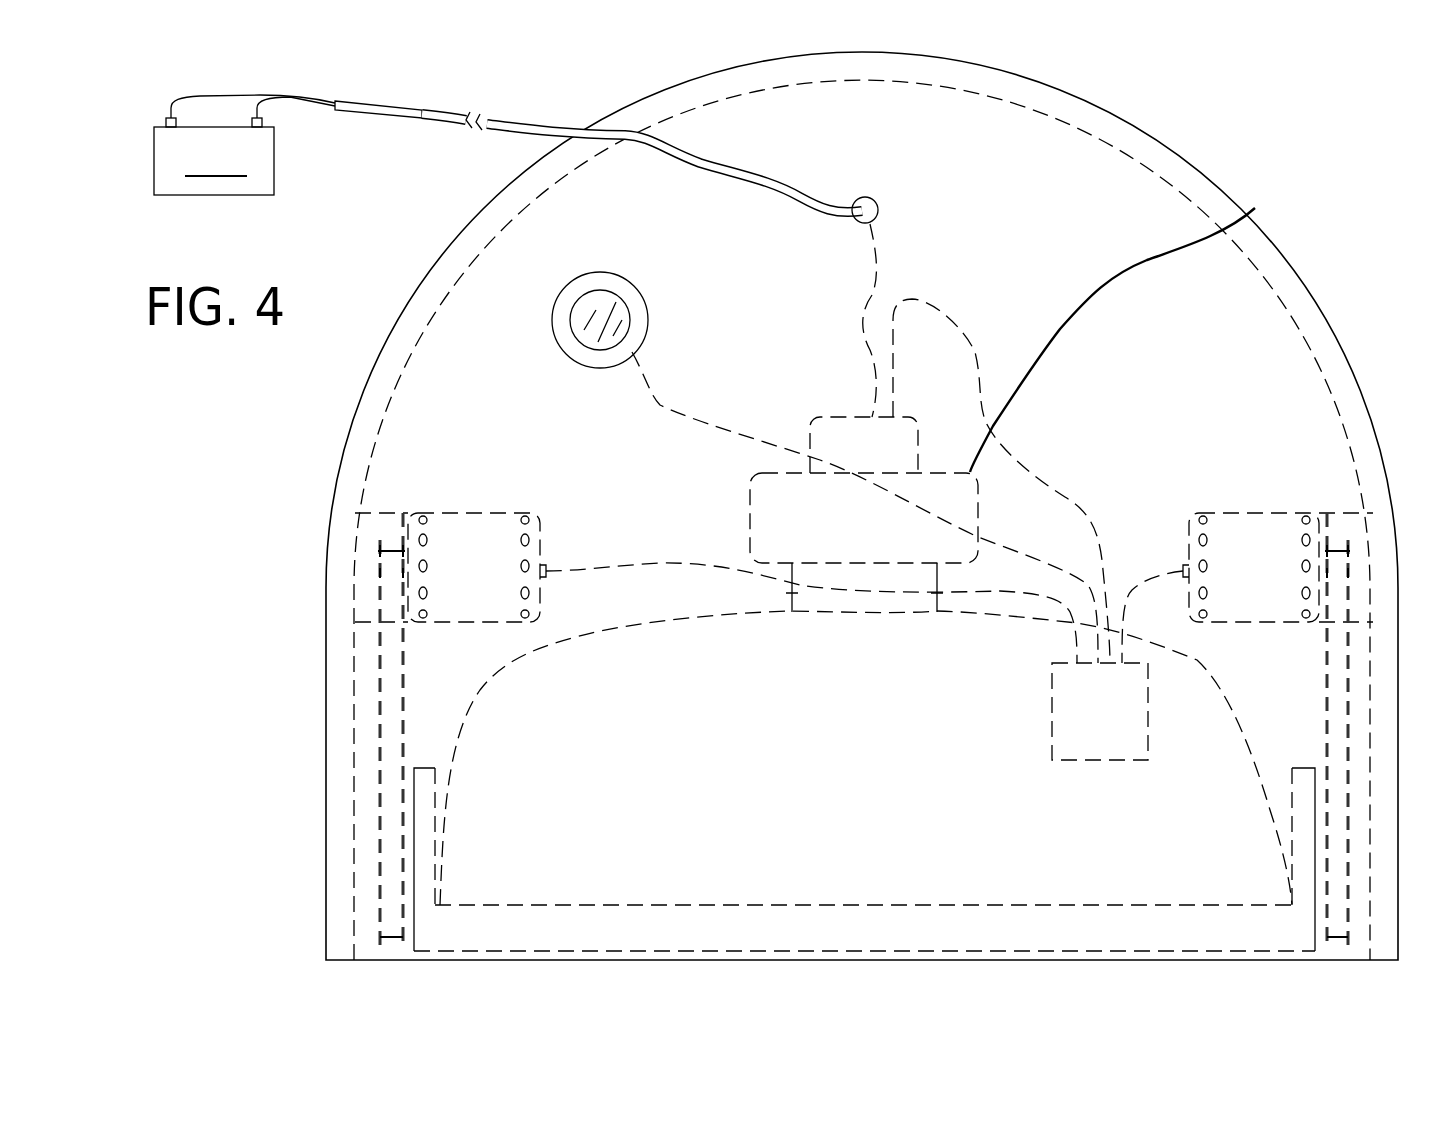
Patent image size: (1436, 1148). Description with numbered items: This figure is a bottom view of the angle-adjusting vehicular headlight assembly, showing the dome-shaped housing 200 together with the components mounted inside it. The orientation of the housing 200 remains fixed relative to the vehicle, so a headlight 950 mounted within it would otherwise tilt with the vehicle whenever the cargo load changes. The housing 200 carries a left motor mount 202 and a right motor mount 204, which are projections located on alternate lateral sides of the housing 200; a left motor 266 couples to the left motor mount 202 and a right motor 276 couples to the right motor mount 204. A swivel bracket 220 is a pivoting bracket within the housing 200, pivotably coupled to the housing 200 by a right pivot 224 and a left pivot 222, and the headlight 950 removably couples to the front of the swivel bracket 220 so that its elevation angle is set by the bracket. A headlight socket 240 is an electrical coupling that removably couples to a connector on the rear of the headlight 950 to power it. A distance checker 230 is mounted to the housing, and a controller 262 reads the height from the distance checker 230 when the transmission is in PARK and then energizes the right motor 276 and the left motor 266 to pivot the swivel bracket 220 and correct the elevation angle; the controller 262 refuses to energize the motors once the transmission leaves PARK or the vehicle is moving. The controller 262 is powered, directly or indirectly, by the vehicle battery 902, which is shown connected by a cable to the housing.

The housing 200 is at (1140, 128).
The left motor mount 202 is at (1342, 525).
The right motor mount 204 is at (370, 532).
The swivel bracket 220 is at (437, 925).
The left pivot 222 is at (1320, 822).
The right pivot 224 is at (408, 822).
The distance checker 230 is at (590, 312).
The headlight socket 240 is at (1255, 208).
The controller 262 is at (1072, 708).
The left motor 266 is at (1249, 530).
The right motor 276 is at (460, 540).
The vehicle battery 902 is at (516, 159).
The headlight 950 is at (525, 748).